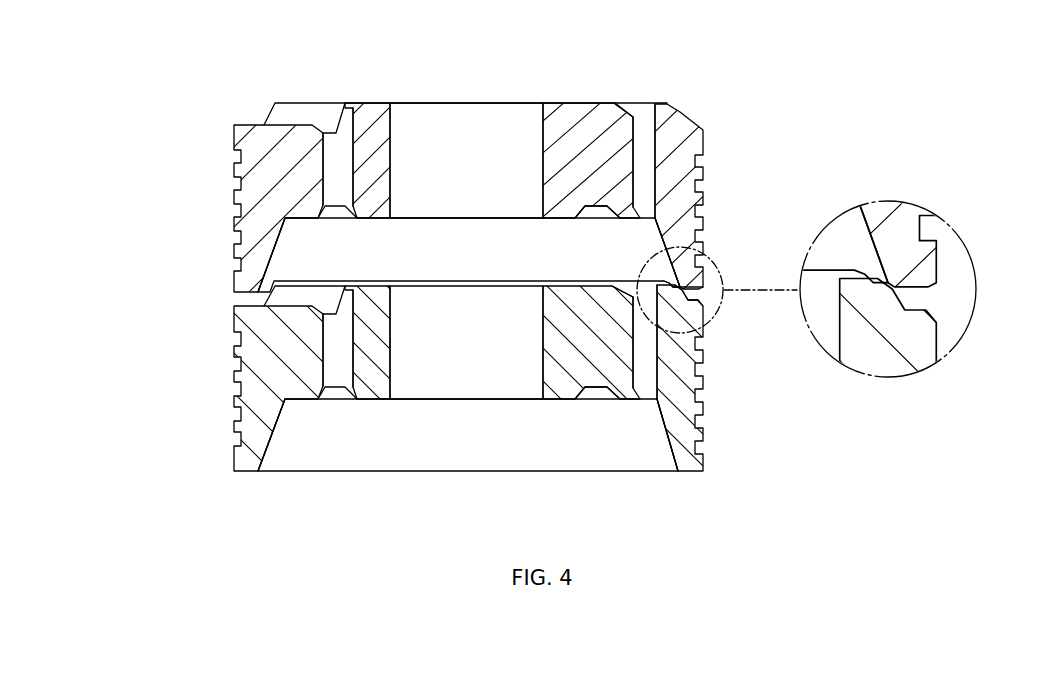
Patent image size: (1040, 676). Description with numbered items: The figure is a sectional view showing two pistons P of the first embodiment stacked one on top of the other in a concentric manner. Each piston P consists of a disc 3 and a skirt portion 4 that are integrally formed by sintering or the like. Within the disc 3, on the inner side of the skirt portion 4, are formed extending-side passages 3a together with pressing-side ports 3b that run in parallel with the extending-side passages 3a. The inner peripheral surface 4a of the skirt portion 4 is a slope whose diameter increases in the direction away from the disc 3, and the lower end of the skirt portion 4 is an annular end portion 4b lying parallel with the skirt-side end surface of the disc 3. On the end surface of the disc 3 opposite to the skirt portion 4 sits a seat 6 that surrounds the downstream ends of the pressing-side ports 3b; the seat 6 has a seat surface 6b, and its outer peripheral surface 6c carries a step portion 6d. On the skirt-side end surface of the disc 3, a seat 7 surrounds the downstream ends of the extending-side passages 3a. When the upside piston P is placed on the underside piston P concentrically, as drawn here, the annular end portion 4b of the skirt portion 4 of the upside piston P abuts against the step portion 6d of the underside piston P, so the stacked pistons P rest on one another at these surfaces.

The piston P is at (240, 110).
The disc 3 is at (248, 133).
The extending-side passages 3a is at (341, 140).
The pressing-side ports 3b is at (645, 130).
The skirt portion 4 is at (240, 280).
The inner peripheral surface 4a is at (275, 257).
The annular end portion 4b is at (696, 300).
The seat 6 is at (628, 112).
The seat surface 6b is at (672, 284).
The outer peripheral surface 6c is at (681, 284).
The step portion 6d is at (686, 290).
The seat 7 is at (346, 402).